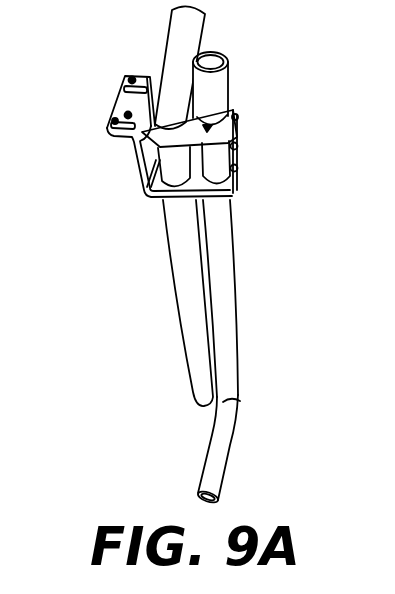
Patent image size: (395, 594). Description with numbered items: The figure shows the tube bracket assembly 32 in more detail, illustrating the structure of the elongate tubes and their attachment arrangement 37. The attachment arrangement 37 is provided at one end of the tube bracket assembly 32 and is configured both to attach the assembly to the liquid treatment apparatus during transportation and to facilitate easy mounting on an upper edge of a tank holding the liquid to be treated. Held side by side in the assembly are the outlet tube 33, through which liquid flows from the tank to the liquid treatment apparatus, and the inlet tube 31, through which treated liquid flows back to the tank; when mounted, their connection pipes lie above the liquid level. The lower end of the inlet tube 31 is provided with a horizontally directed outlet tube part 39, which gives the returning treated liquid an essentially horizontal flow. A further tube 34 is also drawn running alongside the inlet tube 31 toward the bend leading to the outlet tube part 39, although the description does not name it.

The inlet tube 31 is at (185, 265).
The tube bracket assembly 32 is at (233, 52).
The outlet tube 33 is at (218, 225).
The tube 34 is at (237, 268).
The attachment arrangement 37 is at (120, 105).
The outlet tube part 39 is at (215, 466).